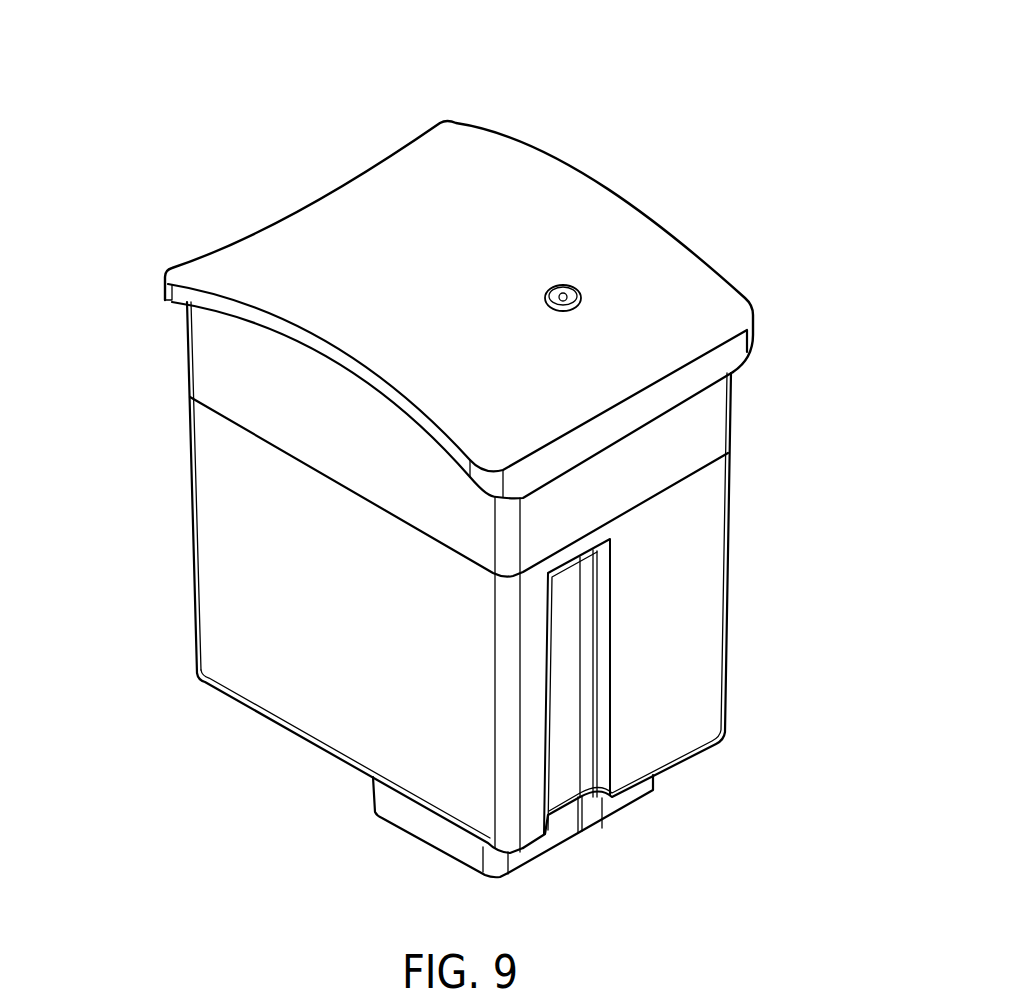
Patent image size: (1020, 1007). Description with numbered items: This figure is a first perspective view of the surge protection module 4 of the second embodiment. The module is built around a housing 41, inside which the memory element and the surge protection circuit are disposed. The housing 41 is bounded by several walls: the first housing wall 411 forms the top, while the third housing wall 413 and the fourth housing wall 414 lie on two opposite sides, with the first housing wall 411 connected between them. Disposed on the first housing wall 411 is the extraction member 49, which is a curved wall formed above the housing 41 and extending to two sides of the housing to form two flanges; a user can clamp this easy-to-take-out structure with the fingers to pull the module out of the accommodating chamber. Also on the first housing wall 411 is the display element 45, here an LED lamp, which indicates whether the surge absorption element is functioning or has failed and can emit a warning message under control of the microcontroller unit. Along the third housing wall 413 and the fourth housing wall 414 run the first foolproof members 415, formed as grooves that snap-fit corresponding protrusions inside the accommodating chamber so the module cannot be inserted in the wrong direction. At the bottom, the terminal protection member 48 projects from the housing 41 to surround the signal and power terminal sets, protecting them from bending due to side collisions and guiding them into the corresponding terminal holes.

The surge protection module 4 is at (747, 78).
The first housing wall 411 is at (500, 162).
The extraction member 49 is at (230, 307).
The display element 45 is at (563, 297).
The housing 41 is at (227, 552).
The fourth housing wall 414 is at (175, 482).
The third housing wall 413 is at (670, 678).
The first foolproof member 415 is at (573, 657).
The terminal protection member 48 is at (623, 802).